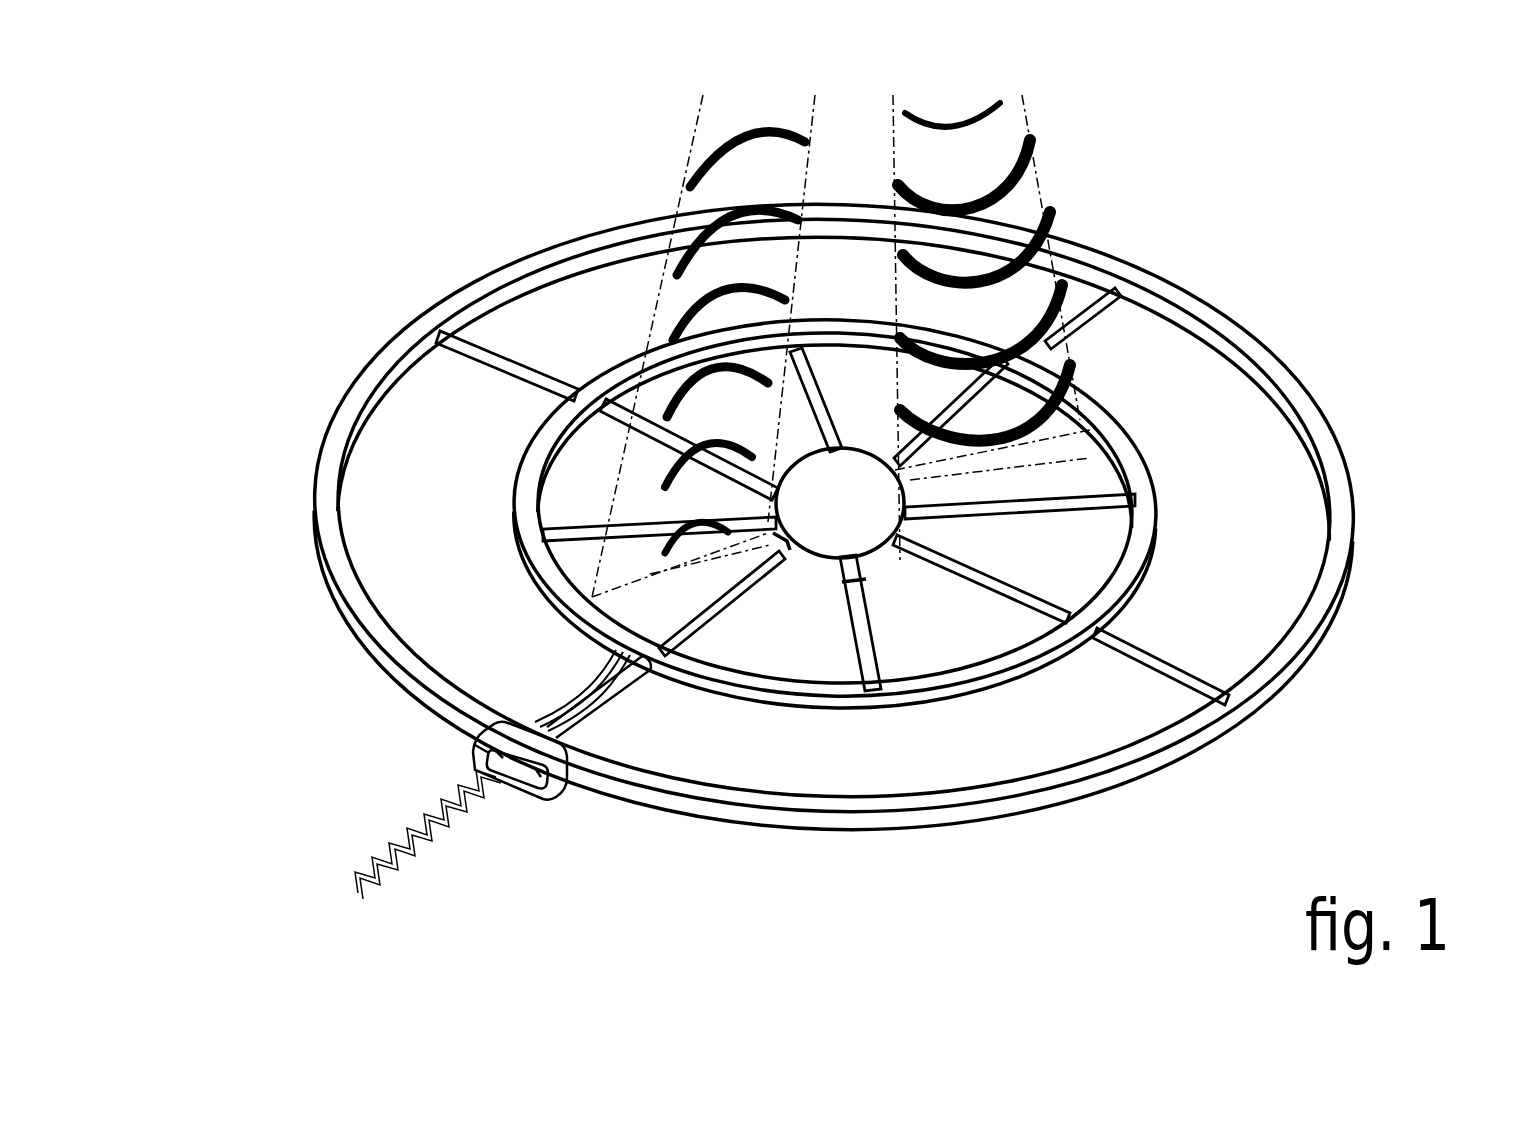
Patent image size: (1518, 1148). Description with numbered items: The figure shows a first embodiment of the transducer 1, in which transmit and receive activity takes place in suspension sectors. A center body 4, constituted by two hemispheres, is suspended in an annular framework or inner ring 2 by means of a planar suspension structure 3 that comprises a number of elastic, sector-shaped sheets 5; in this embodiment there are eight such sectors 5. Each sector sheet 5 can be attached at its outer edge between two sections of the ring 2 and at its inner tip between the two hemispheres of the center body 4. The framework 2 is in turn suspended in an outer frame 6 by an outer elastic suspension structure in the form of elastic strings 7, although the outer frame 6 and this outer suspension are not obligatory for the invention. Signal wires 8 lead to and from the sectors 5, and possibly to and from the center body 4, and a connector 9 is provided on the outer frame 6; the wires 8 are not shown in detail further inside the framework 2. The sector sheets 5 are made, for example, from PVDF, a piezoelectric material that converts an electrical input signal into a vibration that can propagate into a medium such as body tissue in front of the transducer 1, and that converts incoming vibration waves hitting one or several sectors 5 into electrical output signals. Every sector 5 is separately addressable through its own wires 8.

The transducer 1 is at (821, 497).
The annular framework (inner ring) 2 is at (1138, 477).
The planar suspension structure 3 is at (1085, 567).
The center body 4 is at (765, 580).
The sector-shaped sheets 5 is at (583, 472).
The outer frame 6 is at (1160, 745).
The elastic strings 7 is at (1133, 653).
The signal wires 8 is at (587, 672).
The connector 9 is at (512, 772).